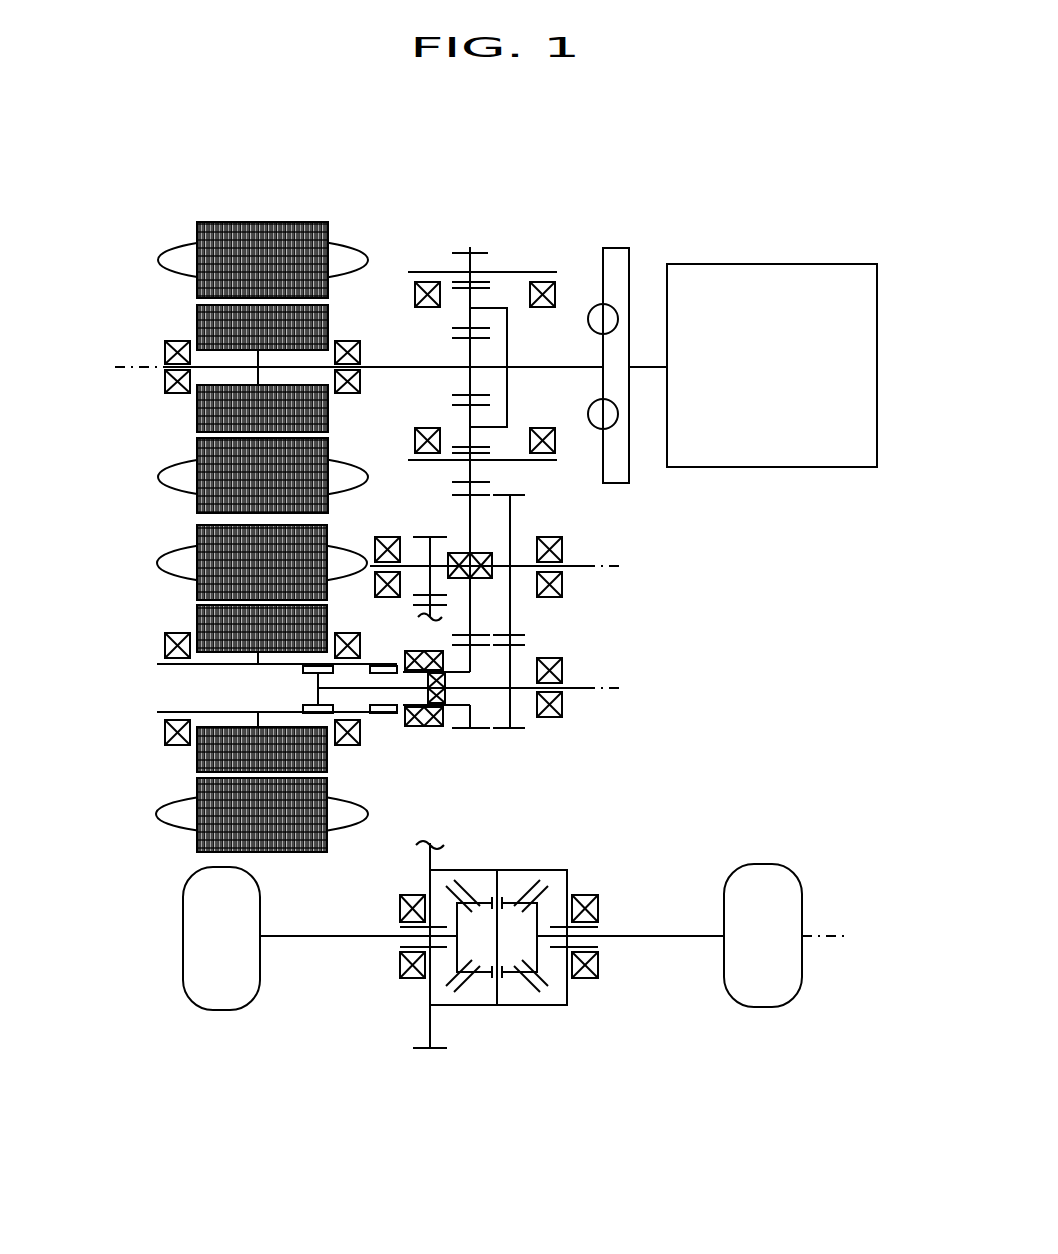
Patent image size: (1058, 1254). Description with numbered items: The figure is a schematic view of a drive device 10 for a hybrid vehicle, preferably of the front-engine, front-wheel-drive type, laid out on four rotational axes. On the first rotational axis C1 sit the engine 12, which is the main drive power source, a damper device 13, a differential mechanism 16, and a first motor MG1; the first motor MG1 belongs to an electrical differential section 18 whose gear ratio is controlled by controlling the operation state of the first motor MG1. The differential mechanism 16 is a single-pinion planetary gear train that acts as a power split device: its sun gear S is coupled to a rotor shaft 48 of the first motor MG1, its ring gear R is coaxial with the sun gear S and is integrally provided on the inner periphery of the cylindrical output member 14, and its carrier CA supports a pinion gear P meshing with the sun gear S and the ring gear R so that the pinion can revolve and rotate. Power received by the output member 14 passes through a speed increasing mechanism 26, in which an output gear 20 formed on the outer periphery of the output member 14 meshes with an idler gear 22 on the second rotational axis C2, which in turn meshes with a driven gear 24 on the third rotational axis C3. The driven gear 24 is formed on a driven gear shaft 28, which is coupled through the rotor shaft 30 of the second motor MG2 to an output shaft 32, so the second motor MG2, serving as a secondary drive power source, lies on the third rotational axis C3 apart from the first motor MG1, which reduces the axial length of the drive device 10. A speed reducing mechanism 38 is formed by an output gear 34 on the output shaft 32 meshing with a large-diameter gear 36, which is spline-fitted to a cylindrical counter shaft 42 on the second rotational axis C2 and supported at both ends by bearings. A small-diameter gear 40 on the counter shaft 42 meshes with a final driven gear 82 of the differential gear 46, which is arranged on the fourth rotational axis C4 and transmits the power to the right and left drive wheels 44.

The drive device 10 is at (662, 160).
The engine 12 is at (757, 277).
The damper device 13 is at (631, 263).
The output member 14 is at (514, 272).
The differential mechanism 16 is at (497, 335).
The electrical differential section 18 is at (265, 338).
The output gear 20 is at (463, 252).
The idler gear 22 is at (467, 518).
The driven gear 24 is at (460, 731).
The speed increasing mechanism 26 is at (440, 637).
The driven gear shaft 28 is at (457, 672).
The rotor shaft 30 is at (212, 666).
The output shaft 32 is at (474, 690).
The output gear 34 is at (515, 731).
The large-diameter gear 36 is at (520, 495).
The speed reducing mechanism 38 is at (552, 637).
The small-diameter gear 40 is at (428, 538).
The counter shaft 42 is at (506, 572).
The drive wheels 44 is at (210, 990).
The differential gear 46 is at (410, 1003).
The rotor shaft 48 is at (385, 366).
The final driven gear 82 is at (437, 1050).
The first motor MG1 is at (254, 297).
The second motor MG2 is at (165, 606).
The ring gear R is at (484, 284).
The pinion gear P is at (458, 319).
The sun gear S is at (458, 354).
The carrier CA is at (510, 349).
The first rotational axis C1 is at (148, 370).
The second rotational axis C2 is at (605, 567).
The third rotational axis C3 is at (605, 690).
The fourth rotational axis C4 is at (835, 937).